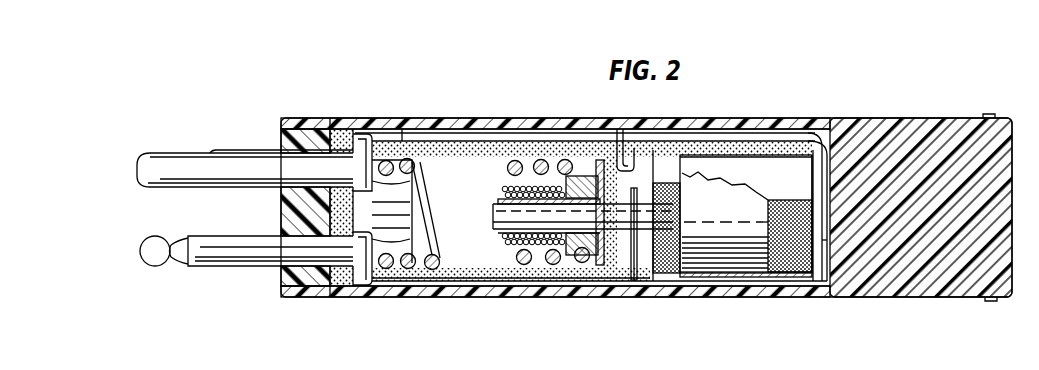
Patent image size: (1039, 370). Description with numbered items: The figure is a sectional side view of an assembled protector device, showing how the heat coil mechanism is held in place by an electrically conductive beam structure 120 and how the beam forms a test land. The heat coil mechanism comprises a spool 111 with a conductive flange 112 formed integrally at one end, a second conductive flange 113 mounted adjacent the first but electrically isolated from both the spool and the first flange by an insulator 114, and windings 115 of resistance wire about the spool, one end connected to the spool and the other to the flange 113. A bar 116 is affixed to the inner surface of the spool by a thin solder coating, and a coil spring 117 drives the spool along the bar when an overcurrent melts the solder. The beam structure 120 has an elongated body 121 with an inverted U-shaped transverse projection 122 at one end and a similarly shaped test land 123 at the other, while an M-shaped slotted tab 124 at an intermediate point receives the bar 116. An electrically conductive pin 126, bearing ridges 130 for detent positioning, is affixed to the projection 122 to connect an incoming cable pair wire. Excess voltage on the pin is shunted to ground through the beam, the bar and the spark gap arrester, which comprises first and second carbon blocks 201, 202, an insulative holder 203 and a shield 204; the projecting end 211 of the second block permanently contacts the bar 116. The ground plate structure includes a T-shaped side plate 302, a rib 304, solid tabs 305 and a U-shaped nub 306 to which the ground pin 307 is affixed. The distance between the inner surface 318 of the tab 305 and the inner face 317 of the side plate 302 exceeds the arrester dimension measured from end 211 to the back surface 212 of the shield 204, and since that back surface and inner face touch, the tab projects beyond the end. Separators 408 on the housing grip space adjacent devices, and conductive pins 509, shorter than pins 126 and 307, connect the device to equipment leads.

The spool 111 is at (546, 265).
The conductive flange 112 is at (600, 158).
The conductive flange 113 is at (559, 160).
The insulator 114 is at (582, 160).
The windings 115 is at (512, 268).
The bar 116 is at (495, 232).
The coil spring 117 is at (517, 160).
The electrically conductive beam structure 120 is at (600, 283).
The elongated body 121 is at (568, 268).
The U-shaped transverse projection 122 is at (359, 286).
The test land 123 is at (823, 242).
The M-shaped slotted tab 124 is at (634, 283).
The electrically conductive pin 126 is at (226, 250).
The ridges 130 is at (172, 265).
The first carbon block 201 is at (764, 250).
The second carbon block 202 is at (678, 273).
The insulative holder 203 is at (720, 250).
The shield 204 is at (740, 168).
The projecting end 211 is at (662, 282).
The back surface 212 is at (786, 275).
The side plate 302 is at (813, 138).
The rib 304 is at (424, 138).
The solid tabs 305 is at (628, 145).
The nub 306 is at (357, 134).
The electrically conductive pin 307 is at (156, 158).
The inner face 317 is at (806, 172).
The inner surface 318 is at (657, 147).
The separators 408 is at (991, 117).
The conductive pins 509 is at (222, 152).